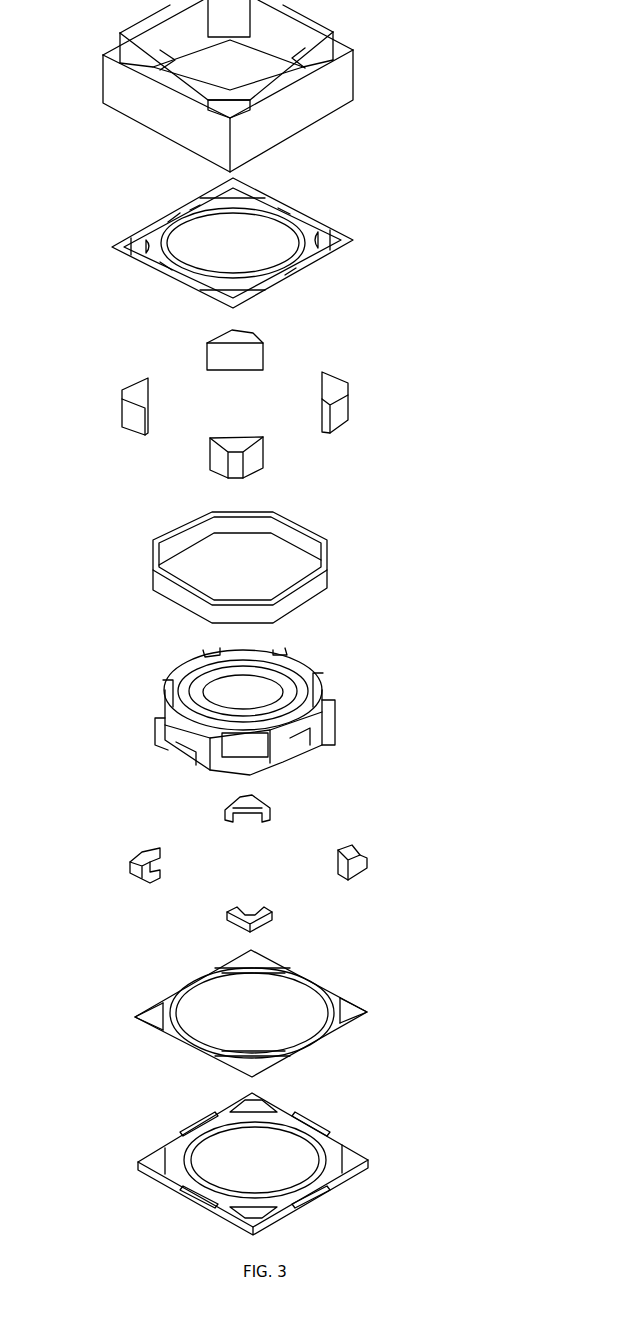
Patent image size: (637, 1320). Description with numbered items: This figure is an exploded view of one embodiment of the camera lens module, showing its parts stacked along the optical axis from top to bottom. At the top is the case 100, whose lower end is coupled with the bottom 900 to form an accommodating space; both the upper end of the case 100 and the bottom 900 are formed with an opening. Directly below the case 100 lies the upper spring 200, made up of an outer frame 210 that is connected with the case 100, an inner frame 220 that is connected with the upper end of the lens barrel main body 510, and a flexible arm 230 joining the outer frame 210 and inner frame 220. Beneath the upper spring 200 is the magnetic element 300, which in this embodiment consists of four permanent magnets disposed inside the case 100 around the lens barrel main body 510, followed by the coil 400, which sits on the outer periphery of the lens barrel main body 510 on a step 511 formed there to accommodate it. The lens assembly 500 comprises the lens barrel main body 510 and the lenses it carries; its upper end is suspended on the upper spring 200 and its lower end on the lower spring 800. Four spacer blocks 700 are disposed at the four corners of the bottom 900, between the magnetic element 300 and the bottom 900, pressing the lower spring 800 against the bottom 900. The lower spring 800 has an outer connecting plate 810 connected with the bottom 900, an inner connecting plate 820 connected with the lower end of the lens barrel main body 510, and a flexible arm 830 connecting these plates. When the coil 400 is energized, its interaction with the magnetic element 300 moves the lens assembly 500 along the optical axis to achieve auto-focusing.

The case 100 is at (330, 85).
The upper spring 200 is at (294, 234).
The outer frame 210 is at (292, 213).
The inner frame 220 is at (298, 257).
The flexible arm 230 is at (318, 248).
The magnetic element 300 is at (337, 415).
The coil 400 is at (313, 588).
The lens assembly 500 is at (270, 735).
The lens barrel main body 510 is at (162, 705).
The step 511 is at (260, 760).
The spacer block 700 is at (353, 852).
The lower spring 800 is at (309, 1006).
The outer connecting plate 810 is at (348, 1008).
The inner connecting plate 820 is at (333, 1027).
The connection part of lower elastic member 830 is at (298, 985).
The bottom 900 is at (362, 1155).